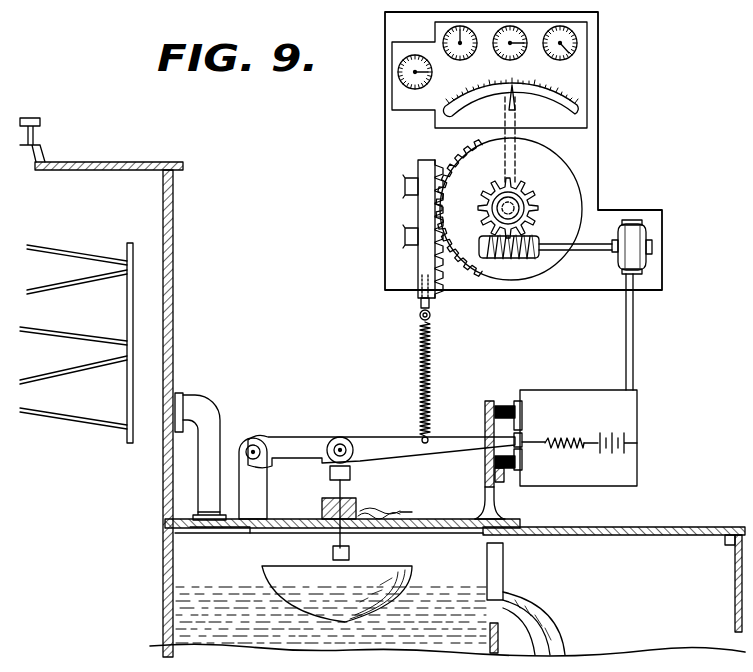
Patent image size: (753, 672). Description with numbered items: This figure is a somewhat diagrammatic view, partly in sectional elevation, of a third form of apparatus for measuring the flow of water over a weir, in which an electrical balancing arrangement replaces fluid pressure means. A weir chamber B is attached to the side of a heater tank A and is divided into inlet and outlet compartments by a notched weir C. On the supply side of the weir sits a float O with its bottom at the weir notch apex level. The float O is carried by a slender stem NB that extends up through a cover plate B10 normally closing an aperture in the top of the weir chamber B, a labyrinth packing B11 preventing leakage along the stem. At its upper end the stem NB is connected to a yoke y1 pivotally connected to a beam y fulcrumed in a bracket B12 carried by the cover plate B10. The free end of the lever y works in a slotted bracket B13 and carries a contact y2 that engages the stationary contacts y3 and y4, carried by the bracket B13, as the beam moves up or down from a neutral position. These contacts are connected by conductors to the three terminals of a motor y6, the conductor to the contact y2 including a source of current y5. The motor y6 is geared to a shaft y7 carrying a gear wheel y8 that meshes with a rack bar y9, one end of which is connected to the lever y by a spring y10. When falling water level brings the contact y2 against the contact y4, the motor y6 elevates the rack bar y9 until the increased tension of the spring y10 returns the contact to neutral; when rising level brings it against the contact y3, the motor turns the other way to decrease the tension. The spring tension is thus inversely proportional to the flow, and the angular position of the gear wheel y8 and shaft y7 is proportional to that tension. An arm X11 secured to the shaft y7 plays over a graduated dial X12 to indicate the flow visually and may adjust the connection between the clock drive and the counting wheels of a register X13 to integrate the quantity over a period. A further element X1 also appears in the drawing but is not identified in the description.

The heater tank A is at (174, 312).
The weir chamber B is at (630, 527).
The cover plate B10 is at (508, 518).
The labyrinth packing B11 is at (333, 505).
The bracket B12 is at (243, 526).
The slotted bracket B13 is at (485, 496).
The slender stem NB is at (362, 508).
The conductor X1 is at (421, 514).
The arm X11 is at (516, 133).
The graduated dial X12 is at (515, 88).
The register X13 is at (577, 91).
The beam y is at (300, 440).
The yoke y1 is at (352, 457).
The contact y2 is at (523, 430).
The stationary contact y3 is at (517, 405).
The stationary contact y4 is at (523, 462).
The source of current y5 is at (612, 433).
The motor y6 is at (648, 244).
The shaft y7 is at (520, 200).
The gear wheel y8 is at (468, 252).
The rack bar y9 is at (418, 207).
The spring y10 is at (420, 356).
The float O is at (337, 584).
The notched weir C is at (515, 660).